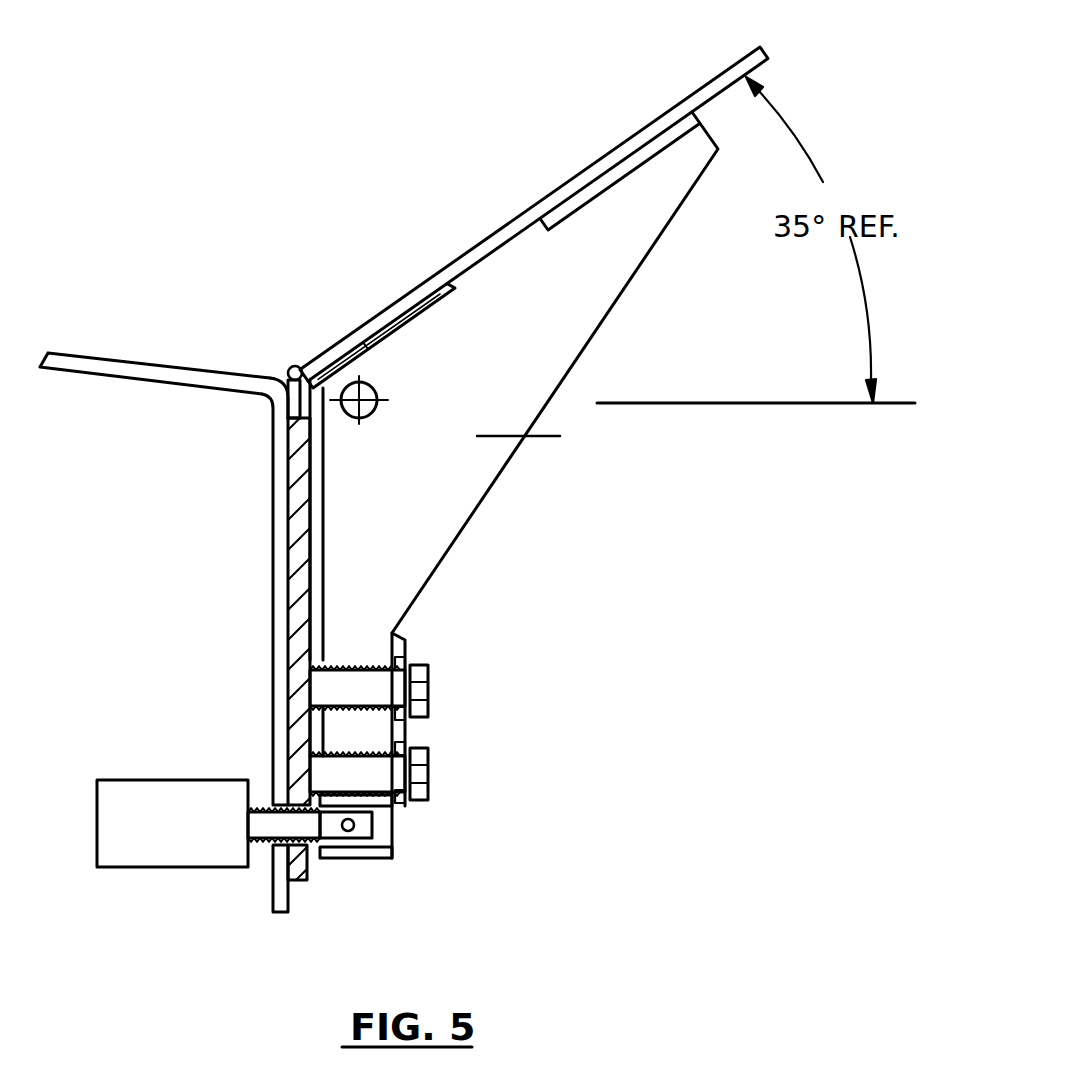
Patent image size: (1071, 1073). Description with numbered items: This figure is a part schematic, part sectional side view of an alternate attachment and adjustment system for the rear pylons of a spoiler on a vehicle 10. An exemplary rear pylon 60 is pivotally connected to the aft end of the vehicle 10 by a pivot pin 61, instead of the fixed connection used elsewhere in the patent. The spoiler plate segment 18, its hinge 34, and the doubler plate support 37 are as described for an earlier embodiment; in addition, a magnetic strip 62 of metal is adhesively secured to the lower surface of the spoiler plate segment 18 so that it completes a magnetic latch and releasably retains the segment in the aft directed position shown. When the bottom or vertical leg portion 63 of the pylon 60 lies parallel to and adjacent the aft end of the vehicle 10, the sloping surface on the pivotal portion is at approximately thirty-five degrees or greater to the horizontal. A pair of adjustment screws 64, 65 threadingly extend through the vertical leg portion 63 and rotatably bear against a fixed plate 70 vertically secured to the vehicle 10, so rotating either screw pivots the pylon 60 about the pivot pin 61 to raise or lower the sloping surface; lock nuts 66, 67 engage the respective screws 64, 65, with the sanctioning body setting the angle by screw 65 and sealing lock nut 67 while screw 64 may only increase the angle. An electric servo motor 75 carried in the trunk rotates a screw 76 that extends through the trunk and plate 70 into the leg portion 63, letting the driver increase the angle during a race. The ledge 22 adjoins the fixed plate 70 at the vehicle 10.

The vehicle 10 is at (273, 488).
The spoiler plate segment 18 is at (690, 90).
The ledge 22 is at (122, 363).
The hinge 34 is at (340, 333).
The doubler plate support 37 is at (420, 290).
The rear pylon 60 is at (560, 436).
The pivot pin 61 is at (375, 415).
The magnetic strip 62 is at (602, 189).
The vertical leg portion 63 is at (395, 638).
The adjustment screw 64 is at (428, 691).
The adjustment screw 65 is at (428, 802).
The lock nut 66 is at (402, 657).
The lock nut 67 is at (403, 743).
The fixed plate 70 is at (297, 580).
The electric servo motor 75 is at (158, 797).
The screw 76 is at (262, 842).